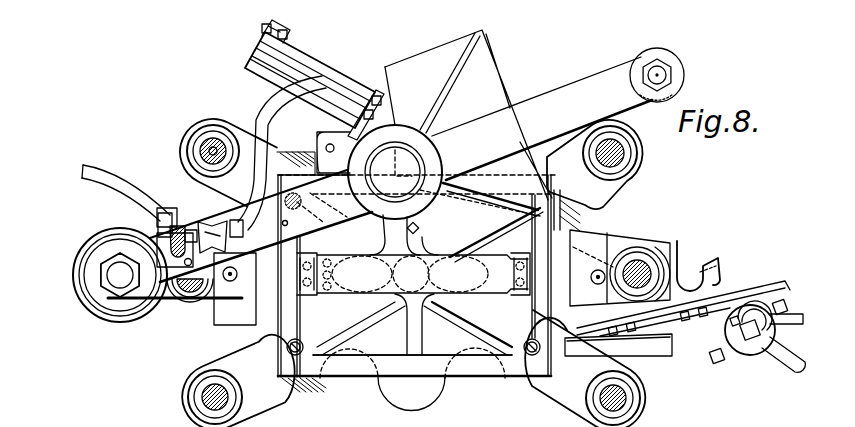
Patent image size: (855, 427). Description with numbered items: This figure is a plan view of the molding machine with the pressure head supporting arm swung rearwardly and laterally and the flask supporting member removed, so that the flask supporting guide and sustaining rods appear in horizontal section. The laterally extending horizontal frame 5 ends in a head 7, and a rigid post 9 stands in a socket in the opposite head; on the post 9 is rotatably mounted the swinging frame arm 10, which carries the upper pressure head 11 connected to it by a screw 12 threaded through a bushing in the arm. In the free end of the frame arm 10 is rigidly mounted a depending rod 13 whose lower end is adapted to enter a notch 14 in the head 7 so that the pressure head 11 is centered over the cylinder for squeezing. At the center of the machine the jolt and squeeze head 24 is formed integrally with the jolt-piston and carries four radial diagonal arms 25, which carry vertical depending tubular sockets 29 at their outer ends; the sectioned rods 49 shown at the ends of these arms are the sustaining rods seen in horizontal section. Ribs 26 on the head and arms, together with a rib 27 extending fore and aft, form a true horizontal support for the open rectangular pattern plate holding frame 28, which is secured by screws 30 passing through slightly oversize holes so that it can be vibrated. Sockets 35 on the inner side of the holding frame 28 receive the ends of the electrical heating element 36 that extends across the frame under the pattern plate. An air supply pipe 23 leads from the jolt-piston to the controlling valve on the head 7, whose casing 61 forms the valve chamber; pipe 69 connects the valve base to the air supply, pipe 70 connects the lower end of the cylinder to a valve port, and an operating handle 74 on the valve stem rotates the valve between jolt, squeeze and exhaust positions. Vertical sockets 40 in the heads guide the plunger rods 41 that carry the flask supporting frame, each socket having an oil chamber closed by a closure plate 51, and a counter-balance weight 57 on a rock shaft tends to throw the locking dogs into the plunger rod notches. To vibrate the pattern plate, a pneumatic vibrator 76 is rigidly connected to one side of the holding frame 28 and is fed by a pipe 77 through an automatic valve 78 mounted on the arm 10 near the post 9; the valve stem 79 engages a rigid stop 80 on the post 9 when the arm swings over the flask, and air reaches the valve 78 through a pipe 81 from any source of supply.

The horizontal frame 5 is at (643, 235).
The end head 7 is at (717, 277).
The post 9 is at (118, 279).
The frame arm 10 is at (568, 97).
The pressure head 11 is at (478, 70).
The screw 12 is at (407, 157).
The depending rod 13 is at (658, 73).
The notch 14 is at (692, 264).
The air supply pipe 23 is at (717, 272).
The jolt and squeeze head 24 is at (442, 346).
The radial diagonal arms 25 is at (303, 170).
The ribs 26 is at (480, 317).
The rib 27 is at (408, 336).
The pattern plate holding frame 28 is at (322, 368).
The tubular sockets 29 is at (208, 137).
The screws 30 is at (295, 355).
The sockets 35 is at (320, 296).
The heating element 36 is at (422, 274).
The vertical sockets 40 is at (187, 294).
The plunger rods 41 is at (192, 291).
The roller 49 is at (200, 143).
The closure plate 51 is at (235, 289).
The counter-balance weight 57 is at (650, 351).
The valve casing 61 is at (747, 357).
The air supply pipe 69 is at (797, 314).
The pipe 70 is at (702, 329).
The operating handle 74 is at (788, 362).
The pneumatic vibrator 76 is at (317, 47).
The pipe 77 is at (262, 115).
The automatic valve 78 is at (198, 222).
The valve stem 79 is at (225, 264).
The stop 80 is at (210, 302).
The pipe 81 is at (97, 167).